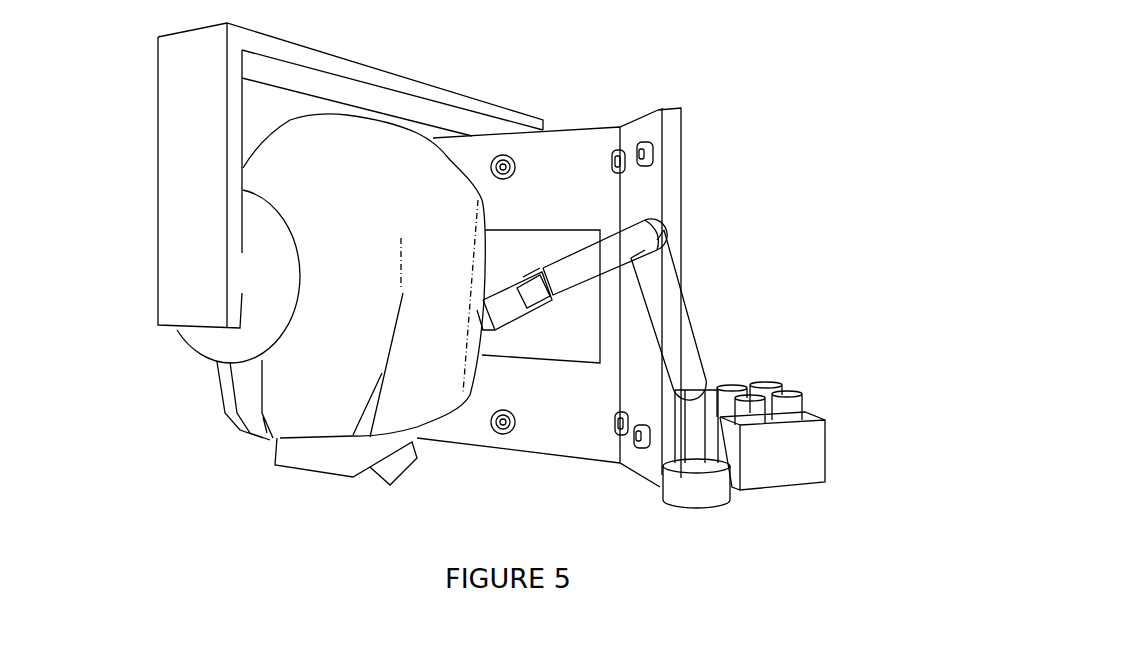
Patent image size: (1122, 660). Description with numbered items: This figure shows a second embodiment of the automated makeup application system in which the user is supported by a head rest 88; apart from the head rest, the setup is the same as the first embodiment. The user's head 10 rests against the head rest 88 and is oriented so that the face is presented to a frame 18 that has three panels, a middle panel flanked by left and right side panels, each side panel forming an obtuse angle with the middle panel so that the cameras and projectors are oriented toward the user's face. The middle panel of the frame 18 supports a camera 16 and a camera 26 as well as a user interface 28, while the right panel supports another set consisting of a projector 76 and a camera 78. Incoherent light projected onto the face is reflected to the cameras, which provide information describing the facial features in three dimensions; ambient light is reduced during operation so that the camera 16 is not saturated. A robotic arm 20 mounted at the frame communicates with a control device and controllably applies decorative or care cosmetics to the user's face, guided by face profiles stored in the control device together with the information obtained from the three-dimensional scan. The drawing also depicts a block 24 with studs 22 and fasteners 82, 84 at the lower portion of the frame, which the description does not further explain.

The user's head 10 is at (262, 143).
The camera 16 is at (510, 163).
The frame 18 is at (680, 186).
The robotic arm 20 is at (693, 303).
The studs of building block 22 is at (770, 385).
The building block 24 is at (825, 446).
The camera 26 is at (493, 427).
The user interface 28 is at (566, 365).
The projector 76 is at (621, 150).
The camera 78 is at (642, 143).
The lower bolt head 82 is at (640, 448).
The lower nut 84 is at (622, 436).
The head rest 88 is at (193, 348).